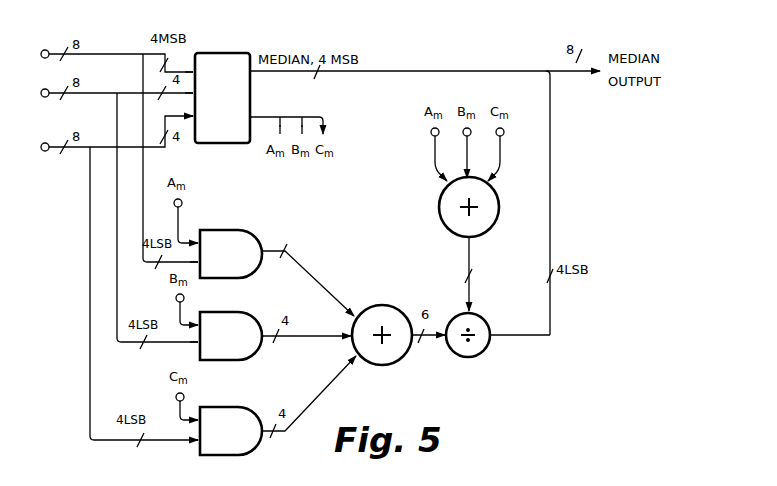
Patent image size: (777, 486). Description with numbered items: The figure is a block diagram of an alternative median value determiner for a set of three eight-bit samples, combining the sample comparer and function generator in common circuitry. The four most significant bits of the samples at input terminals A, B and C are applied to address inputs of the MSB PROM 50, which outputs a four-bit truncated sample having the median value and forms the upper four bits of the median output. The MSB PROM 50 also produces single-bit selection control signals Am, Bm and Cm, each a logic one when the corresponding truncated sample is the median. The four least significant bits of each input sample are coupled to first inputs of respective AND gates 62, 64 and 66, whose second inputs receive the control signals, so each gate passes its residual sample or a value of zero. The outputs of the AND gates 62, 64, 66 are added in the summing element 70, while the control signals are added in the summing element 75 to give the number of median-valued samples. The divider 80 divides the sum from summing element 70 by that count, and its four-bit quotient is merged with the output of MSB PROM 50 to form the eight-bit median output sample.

The MSB PROM 50 is at (219, 53).
The AND gate 62 is at (241, 231).
The AND gate 64 is at (241, 313).
The AND gate 66 is at (241, 408).
The summing element 70 is at (391, 308).
The summing element 75 is at (441, 222).
The divider 80 is at (484, 315).